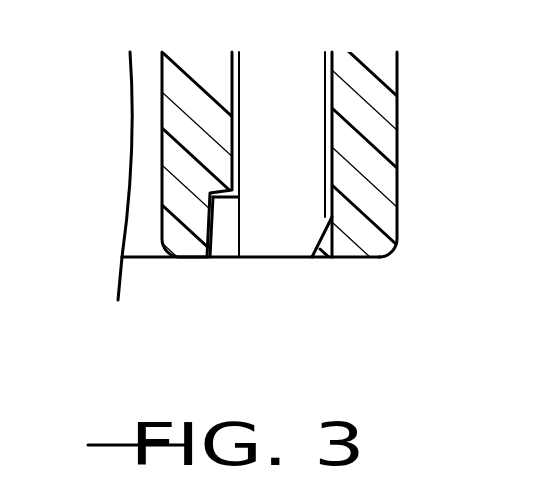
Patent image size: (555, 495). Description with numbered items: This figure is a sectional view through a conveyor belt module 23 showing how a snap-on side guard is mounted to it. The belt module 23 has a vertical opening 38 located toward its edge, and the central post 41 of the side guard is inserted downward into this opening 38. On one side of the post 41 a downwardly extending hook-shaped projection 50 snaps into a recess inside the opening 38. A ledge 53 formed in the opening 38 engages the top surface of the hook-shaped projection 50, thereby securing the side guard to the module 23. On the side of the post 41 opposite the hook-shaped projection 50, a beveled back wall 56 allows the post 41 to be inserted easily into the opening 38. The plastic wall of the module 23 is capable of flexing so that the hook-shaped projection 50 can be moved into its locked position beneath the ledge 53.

The belt module 23 is at (368, 167).
The vertical opening 38 is at (327, 137).
The central post 41 is at (288, 83).
The hook-shaped projection 50 is at (226, 225).
The ledge 53 is at (200, 178).
The beveled back wall 56 is at (322, 238).